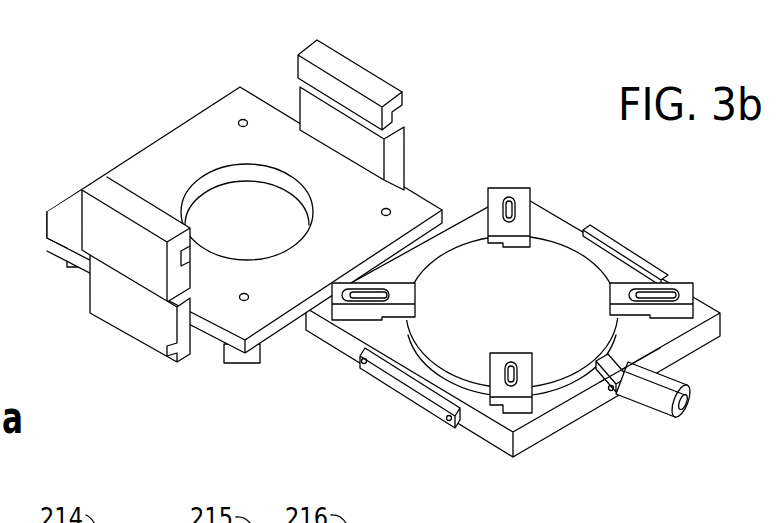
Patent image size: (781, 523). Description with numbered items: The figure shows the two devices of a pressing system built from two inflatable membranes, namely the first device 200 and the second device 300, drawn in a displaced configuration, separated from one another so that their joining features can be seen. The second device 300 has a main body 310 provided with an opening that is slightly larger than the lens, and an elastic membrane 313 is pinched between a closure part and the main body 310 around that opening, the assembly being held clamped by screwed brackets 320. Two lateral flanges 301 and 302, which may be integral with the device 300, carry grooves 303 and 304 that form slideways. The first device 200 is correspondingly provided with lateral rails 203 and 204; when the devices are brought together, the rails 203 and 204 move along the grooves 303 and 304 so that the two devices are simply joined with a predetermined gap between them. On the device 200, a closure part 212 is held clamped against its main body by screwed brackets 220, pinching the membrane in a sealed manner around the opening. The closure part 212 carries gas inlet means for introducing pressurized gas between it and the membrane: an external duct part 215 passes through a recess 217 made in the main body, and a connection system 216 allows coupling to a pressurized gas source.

The first device 200 is at (551, 441).
The lateral rail 203 is at (384, 386).
The lateral rail 204 is at (637, 259).
The closure part 212 is at (548, 268).
The external duct part 215 is at (656, 352).
The connection system 216 is at (653, 403).
The recess 217 is at (617, 398).
The screwed brackets 220 is at (505, 188).
The second device 300 is at (125, 148).
The lateral flange 301 is at (110, 327).
The lateral flange 302 is at (368, 66).
The groove 303 is at (180, 250).
The groove 304 is at (300, 74).
The main body 310 is at (170, 158).
The elastic membrane 313 is at (267, 232).
The screwed brackets 320 is at (67, 258).